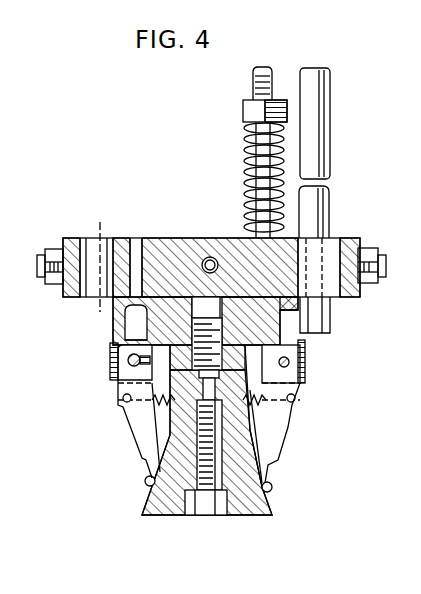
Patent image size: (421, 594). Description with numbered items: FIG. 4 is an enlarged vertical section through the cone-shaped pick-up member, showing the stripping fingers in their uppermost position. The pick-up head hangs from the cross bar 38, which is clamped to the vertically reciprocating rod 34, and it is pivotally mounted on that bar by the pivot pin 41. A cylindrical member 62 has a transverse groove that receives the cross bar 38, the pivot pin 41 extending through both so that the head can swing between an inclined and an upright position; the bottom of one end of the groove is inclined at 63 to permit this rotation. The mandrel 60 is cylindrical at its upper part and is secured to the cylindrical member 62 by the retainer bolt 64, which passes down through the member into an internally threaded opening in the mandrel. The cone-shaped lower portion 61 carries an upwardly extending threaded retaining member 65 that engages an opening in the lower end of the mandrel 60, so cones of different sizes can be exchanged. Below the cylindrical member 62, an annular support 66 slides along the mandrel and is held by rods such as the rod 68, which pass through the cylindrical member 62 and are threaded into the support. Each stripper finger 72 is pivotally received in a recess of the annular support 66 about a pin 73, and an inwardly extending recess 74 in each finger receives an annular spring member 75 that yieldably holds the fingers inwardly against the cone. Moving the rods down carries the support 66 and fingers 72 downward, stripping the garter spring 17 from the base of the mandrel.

The garter spring 17 is at (273, 487).
The rod 34 is at (328, 142).
The cross bar 38 is at (78, 245).
The pivot pin 41 is at (207, 258).
The mandrel portion 60 is at (272, 434).
The cone-shaped lower portion 61 is at (262, 505).
The cylindrical member 62 is at (302, 342).
The inclined bottom portion 63 is at (127, 312).
The retainer bolt 64 is at (118, 378).
The threaded retaining member 65 is at (145, 481).
The annular support 66 is at (110, 362).
The rod 68 is at (244, 137).
The stripper finger 72 is at (138, 432).
The pin 73 is at (300, 370).
The inwardly extending recess 74 is at (295, 400).
The annular spring member 75 is at (124, 402).